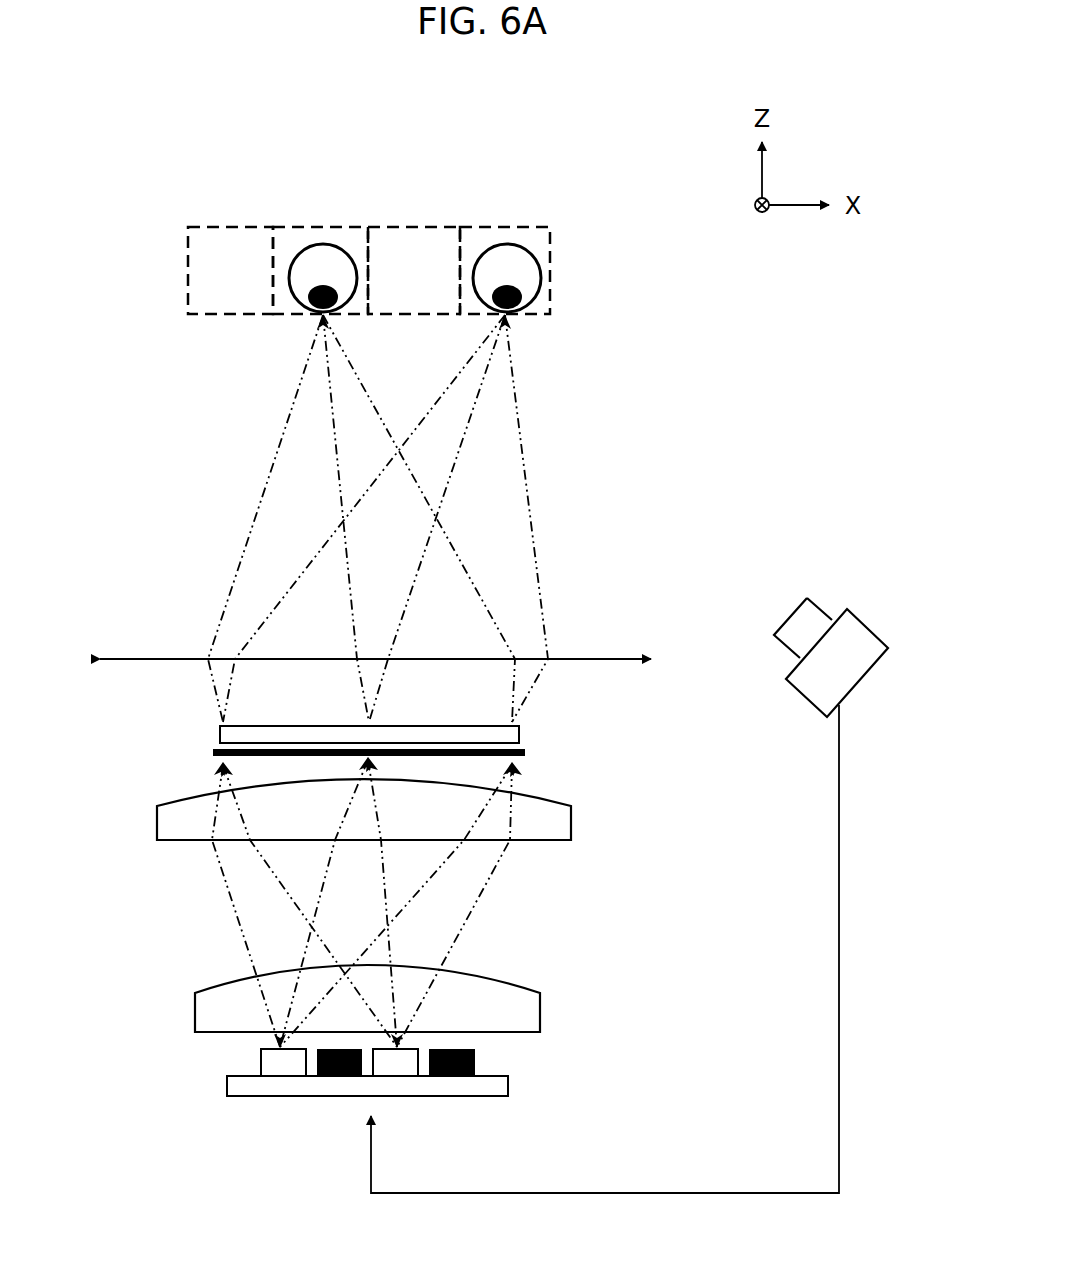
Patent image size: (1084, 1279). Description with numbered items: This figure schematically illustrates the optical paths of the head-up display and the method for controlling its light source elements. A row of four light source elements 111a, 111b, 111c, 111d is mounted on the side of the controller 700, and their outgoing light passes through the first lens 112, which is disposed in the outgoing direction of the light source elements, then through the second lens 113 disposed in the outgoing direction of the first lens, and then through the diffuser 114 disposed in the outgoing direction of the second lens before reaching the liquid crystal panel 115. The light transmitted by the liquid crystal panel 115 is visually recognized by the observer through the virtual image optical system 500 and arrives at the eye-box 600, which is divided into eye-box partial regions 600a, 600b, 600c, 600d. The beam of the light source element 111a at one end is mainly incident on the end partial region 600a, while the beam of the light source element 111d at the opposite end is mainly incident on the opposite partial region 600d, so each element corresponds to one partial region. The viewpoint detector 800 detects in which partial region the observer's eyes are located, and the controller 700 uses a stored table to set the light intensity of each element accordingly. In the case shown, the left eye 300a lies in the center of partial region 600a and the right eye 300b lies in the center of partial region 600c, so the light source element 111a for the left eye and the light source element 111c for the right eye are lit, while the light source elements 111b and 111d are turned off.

The eye-box 600 is at (412, 229).
The eye-box partial region 600a is at (545, 227).
The eye-box partial region 600b is at (420, 227).
The eye-box partial region 600c is at (350, 227).
The eye-box partial region 600d is at (212, 227).
The left eye 300a is at (489, 248).
The right eye 300b is at (297, 248).
The virtual image optical system 500 is at (613, 659).
The liquid crystal panel 115 is at (519, 735).
The diffuser 114 is at (526, 752).
The second lens 113 is at (571, 828).
The first lens 112 is at (540, 1013).
The controller 700 is at (508, 1086).
The light source element 111a is at (262, 1060).
The light source element 111b is at (313, 1060).
The light source element 111c is at (420, 1060).
The light source element 111d is at (477, 1060).
The viewpoint detector 800 is at (862, 622).